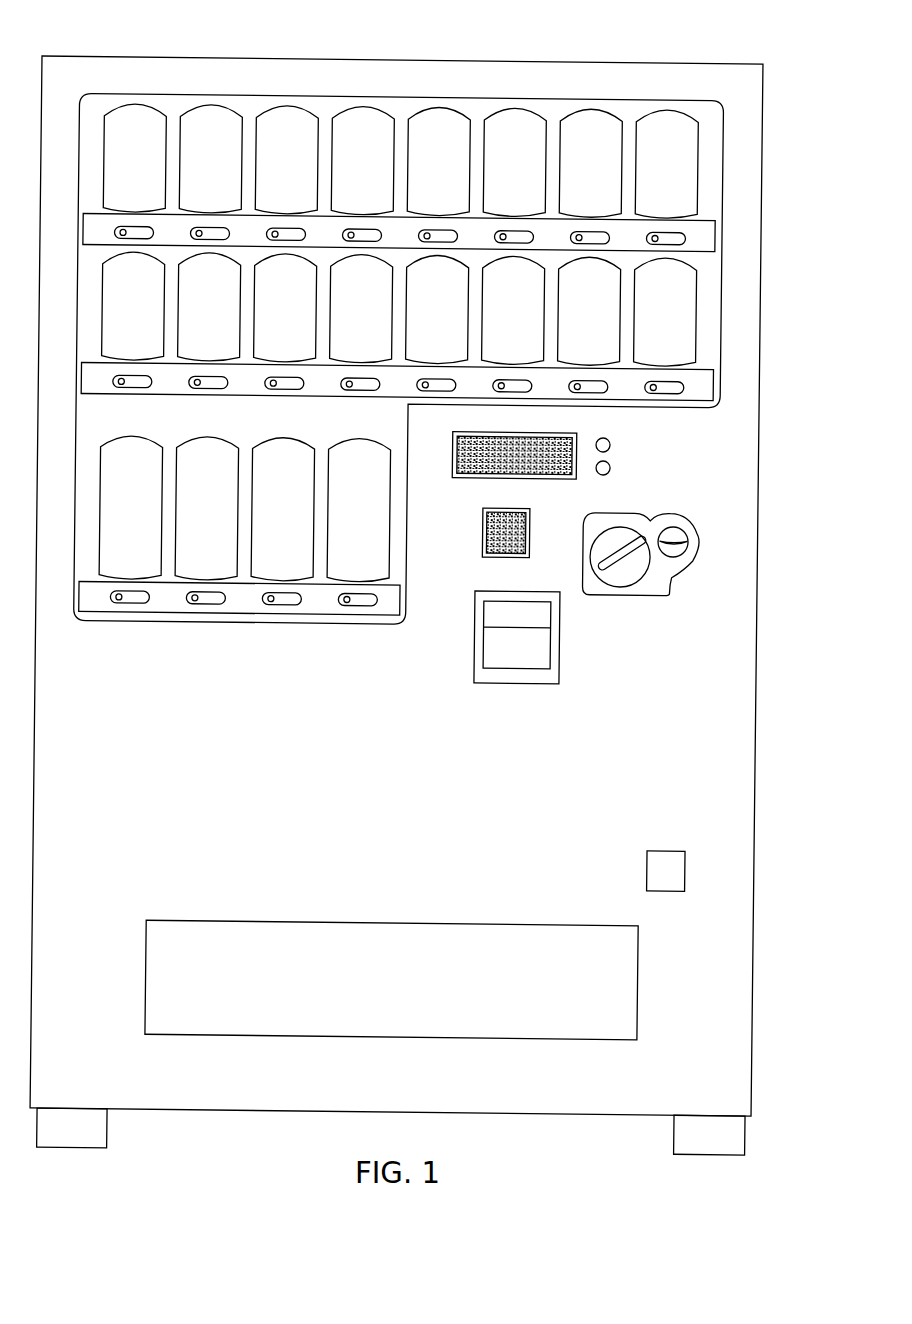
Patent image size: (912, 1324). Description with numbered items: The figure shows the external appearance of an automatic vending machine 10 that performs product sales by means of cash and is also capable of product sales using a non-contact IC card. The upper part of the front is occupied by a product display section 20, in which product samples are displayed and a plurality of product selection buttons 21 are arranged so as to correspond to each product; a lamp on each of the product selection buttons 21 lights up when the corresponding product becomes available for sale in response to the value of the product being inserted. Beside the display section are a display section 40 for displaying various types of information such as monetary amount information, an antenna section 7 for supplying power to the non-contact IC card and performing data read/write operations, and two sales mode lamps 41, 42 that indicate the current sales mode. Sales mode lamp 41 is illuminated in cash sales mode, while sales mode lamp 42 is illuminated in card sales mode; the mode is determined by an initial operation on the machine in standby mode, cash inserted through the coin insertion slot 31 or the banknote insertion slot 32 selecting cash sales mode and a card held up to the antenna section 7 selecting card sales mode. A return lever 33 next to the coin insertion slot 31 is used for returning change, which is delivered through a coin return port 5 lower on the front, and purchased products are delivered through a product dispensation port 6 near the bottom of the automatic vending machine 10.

The automatic vending machine 10 is at (698, 40).
The product display section 20 is at (700, 92).
The product selection buttons 21 is at (687, 231).
The display section 40 is at (500, 473).
The antenna section 7 is at (537, 524).
The sales mode lamp 41 is at (616, 434).
The sales mode lamp 42 is at (615, 468).
The coin insertion slot 31 is at (693, 523).
The return lever 33 is at (640, 578).
The banknote insertion slot 32 is at (490, 633).
The coin return port 5 is at (674, 844).
The product dispensation port 6 is at (500, 919).